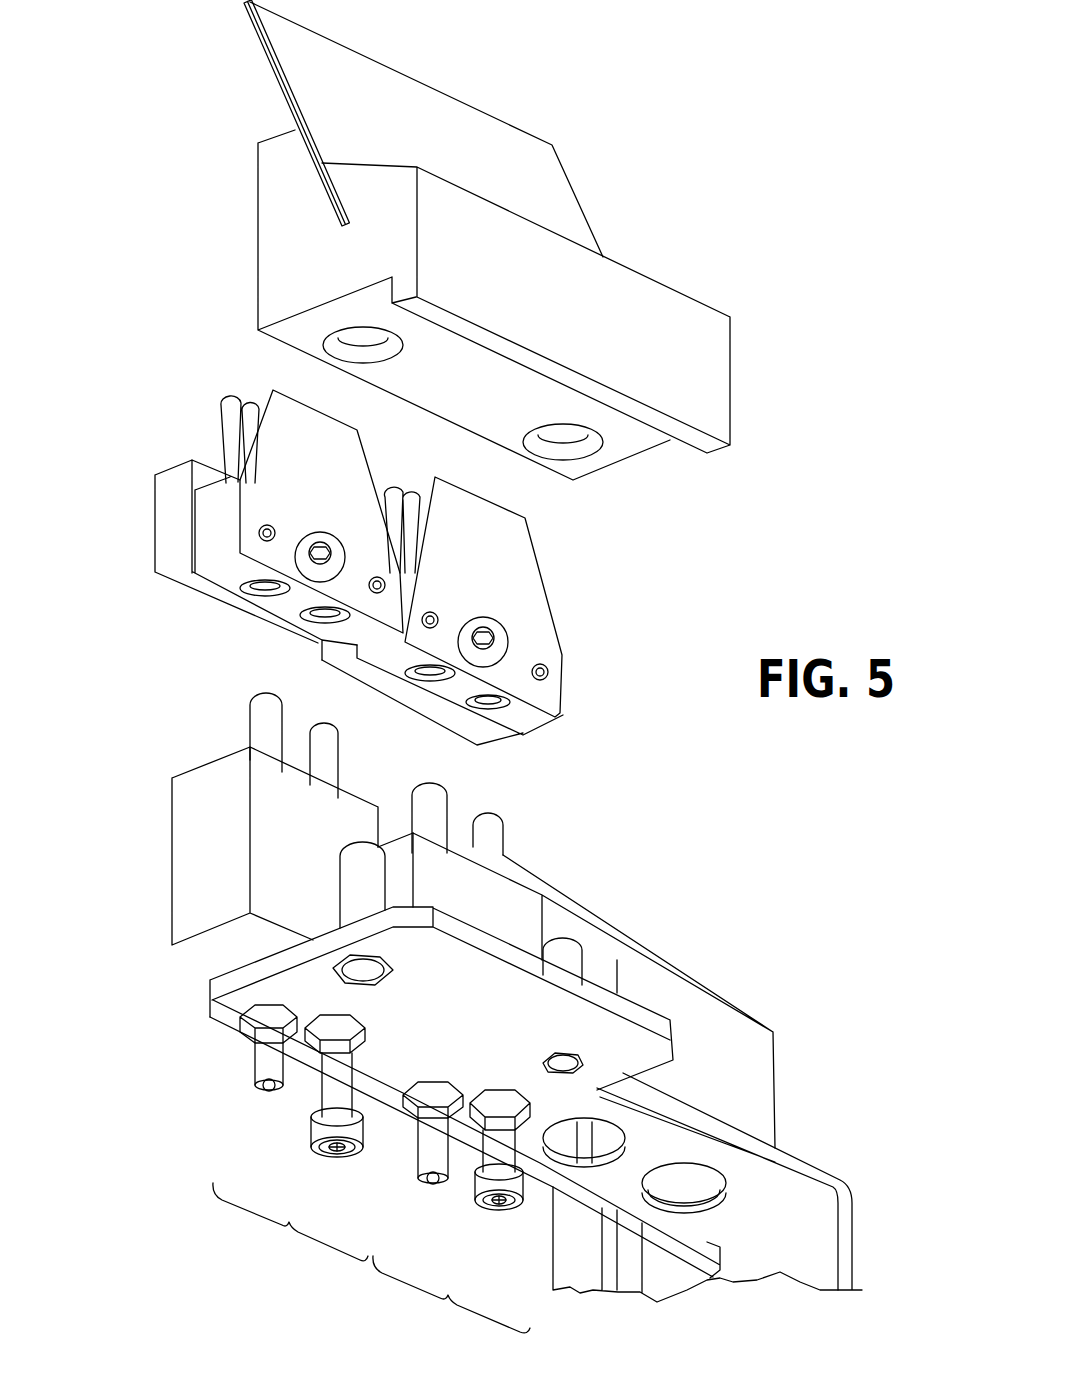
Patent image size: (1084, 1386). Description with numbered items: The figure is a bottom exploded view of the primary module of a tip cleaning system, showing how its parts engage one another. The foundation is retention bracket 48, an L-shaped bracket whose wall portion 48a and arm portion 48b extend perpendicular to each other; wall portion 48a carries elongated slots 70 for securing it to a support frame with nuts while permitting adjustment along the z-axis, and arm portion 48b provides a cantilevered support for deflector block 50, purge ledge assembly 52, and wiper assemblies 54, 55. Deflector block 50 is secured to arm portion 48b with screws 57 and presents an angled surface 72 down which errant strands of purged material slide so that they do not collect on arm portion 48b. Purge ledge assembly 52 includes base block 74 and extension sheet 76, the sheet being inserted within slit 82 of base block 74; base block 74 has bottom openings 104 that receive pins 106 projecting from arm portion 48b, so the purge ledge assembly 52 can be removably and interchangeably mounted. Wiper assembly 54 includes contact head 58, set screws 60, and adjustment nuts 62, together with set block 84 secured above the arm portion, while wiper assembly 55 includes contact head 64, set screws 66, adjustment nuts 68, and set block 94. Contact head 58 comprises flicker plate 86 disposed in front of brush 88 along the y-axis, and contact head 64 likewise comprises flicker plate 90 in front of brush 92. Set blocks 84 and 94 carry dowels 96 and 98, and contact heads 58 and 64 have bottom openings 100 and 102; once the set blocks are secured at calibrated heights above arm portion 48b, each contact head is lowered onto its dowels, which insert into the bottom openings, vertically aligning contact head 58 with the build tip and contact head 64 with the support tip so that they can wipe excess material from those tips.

The retention bracket 48 is at (515, 1147).
The wall portion 48a is at (848, 1258).
The arm portion 48b is at (225, 1003).
The deflector block 50 is at (515, 1001).
The purge ledge assembly 52 is at (498, 256).
The wiper assembly 54 is at (290, 1222).
The wiper assembly 55 is at (451, 1296).
The screws 57 is at (621, 1132).
The contact head 58 is at (237, 503).
The set screws 60 is at (328, 1102).
The adjustment nuts 62 is at (318, 1057).
The contact head 64 is at (473, 607).
The set screws 66 is at (497, 1140).
The adjustment nuts 68 is at (448, 1112).
The slots 70 is at (609, 1279).
The angled surface 72 is at (492, 990).
The base block 74 is at (740, 360).
The extension sheet 76 is at (463, 135).
The slit 82 is at (314, 172).
The set block 84 is at (185, 818).
The flicker plate 86 is at (268, 390).
The brush 88 is at (222, 428).
The flicker plate 90 is at (509, 546).
The brush 92 is at (393, 510).
The set block 94 is at (498, 903).
The dowels 96 is at (327, 735).
The dowels 98 is at (480, 830).
The bottom openings 100 is at (297, 636).
The bottom openings 102 is at (439, 686).
The bottom openings 104 is at (358, 362).
The pins 106 is at (348, 884).